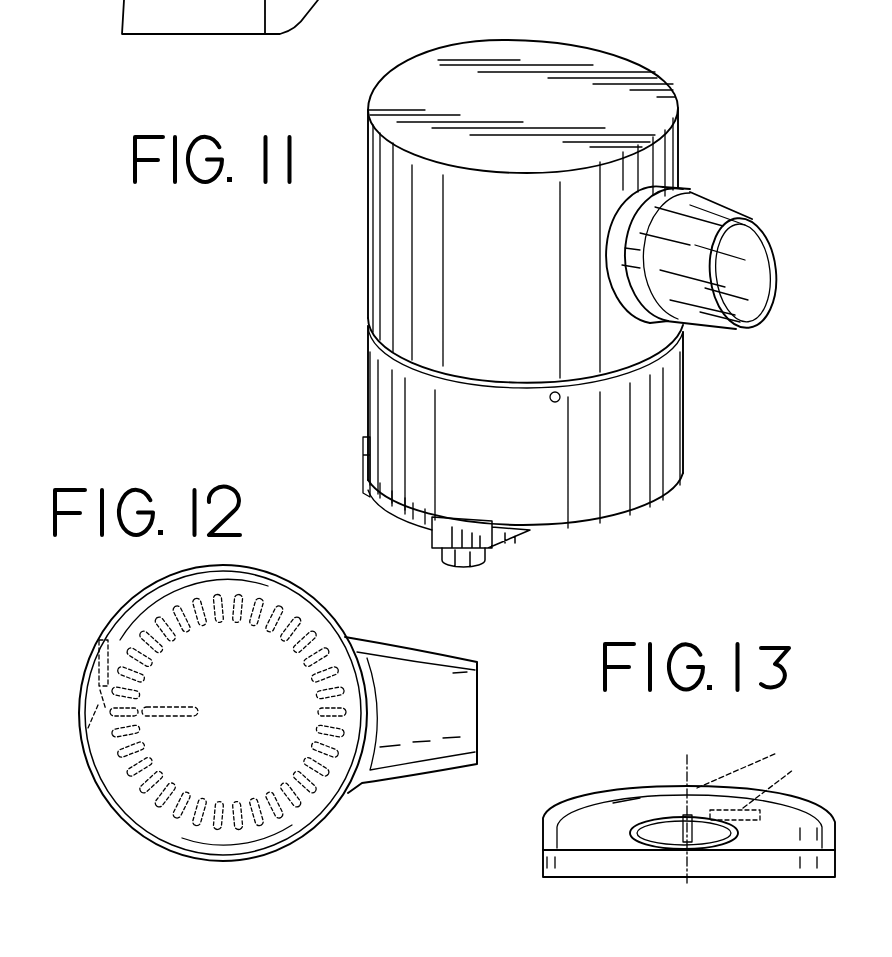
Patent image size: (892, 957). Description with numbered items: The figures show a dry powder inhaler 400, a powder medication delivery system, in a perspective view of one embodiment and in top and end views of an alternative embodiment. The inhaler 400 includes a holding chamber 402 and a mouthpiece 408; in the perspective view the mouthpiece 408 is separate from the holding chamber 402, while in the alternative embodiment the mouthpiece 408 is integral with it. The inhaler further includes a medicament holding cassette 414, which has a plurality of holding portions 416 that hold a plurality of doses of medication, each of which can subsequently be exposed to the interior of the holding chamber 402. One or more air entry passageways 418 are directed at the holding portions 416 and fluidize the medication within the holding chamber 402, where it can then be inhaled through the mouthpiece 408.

In FIG. 11, the dry powder inhaler 400 is at (558, 303).
In FIG. 12, the dry powder inhaler 400 is at (256, 730).
In FIG. 13, the dry powder inhaler 400 is at (675, 834).
In FIG. 11, the holding chamber 402 is at (397, 252).
In FIG. 12, the holding chamber 402 is at (223, 713).
In FIG. 13, the holding chamber 402 is at (597, 827).
In FIG. 11, the mouthpiece 408 is at (752, 283).
In FIG. 12, the mouthpiece 408 is at (412, 772).
In FIG. 13, the mouthpiece 408 is at (657, 835).
In FIG. 11, the medicament holding cassette 414 is at (388, 502).
In FIG. 13, the medicament holding cassette 414 is at (570, 868).
In FIG. 12, the holding portions 416 is at (113, 711).
In FIG. 11, the air entry passageways 418 is at (378, 353).
In FIG. 12, the air entry passageways 418 is at (140, 710).
In FIG. 13, the air entry passageways 418 is at (765, 780).